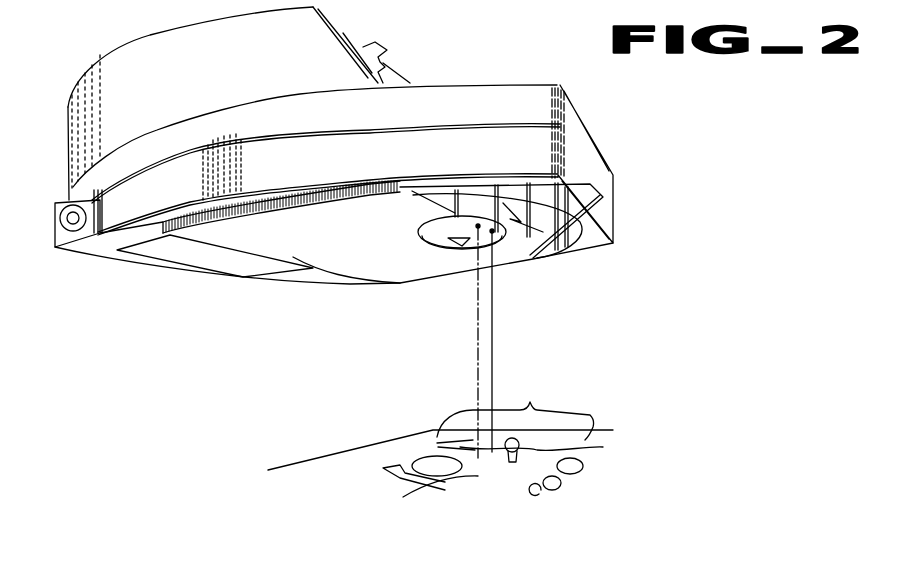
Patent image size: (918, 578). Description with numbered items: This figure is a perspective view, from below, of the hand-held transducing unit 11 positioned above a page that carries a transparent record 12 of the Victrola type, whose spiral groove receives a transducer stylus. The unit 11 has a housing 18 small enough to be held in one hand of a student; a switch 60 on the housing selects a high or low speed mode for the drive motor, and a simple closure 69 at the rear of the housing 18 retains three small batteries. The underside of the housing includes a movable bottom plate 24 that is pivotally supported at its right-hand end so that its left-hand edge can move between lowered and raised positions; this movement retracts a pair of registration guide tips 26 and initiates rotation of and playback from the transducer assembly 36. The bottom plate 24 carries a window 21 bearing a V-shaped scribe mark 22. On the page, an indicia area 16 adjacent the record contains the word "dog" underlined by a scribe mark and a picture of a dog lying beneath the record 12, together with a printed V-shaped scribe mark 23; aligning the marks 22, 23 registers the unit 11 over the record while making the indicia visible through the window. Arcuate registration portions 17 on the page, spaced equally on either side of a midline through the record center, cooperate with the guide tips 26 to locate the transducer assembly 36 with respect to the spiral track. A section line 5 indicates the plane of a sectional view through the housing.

The section line 5- 5 is at (593, 208).
The unit 11 is at (584, 127).
The record 12 is at (421, 460).
The indicia area 16 is at (440, 419).
The arcuate registration portions 17 is at (460, 523).
The housing 18 is at (360, 159).
The window 21 is at (574, 238).
The V-shaped scribe mark 22 is at (535, 235).
The V-shaped scribe mark 23 is at (530, 472).
The movable bottom plate 24 is at (340, 225).
The registration guide tips 26 is at (476, 227).
The transducer assembly 36 is at (437, 245).
The switch 60 is at (379, 42).
The closure 69 is at (166, 254).